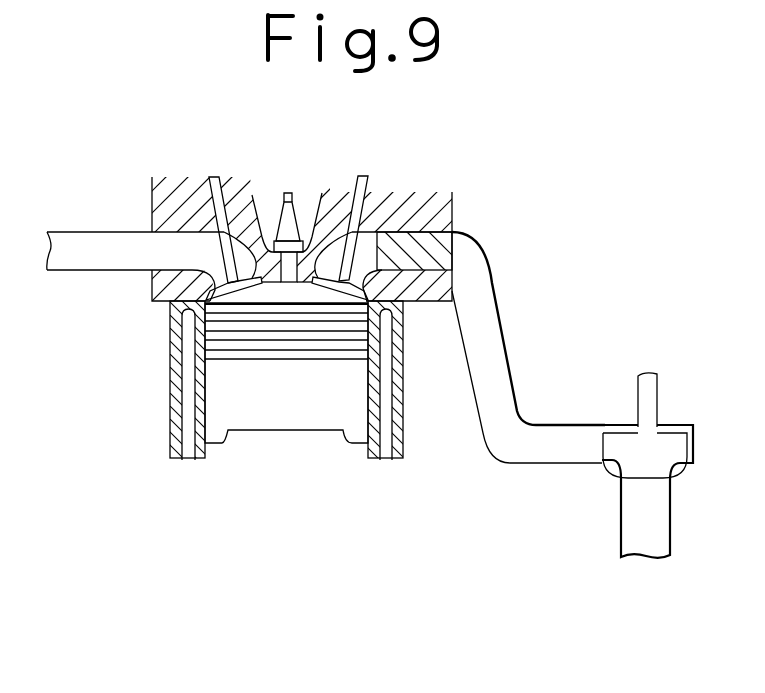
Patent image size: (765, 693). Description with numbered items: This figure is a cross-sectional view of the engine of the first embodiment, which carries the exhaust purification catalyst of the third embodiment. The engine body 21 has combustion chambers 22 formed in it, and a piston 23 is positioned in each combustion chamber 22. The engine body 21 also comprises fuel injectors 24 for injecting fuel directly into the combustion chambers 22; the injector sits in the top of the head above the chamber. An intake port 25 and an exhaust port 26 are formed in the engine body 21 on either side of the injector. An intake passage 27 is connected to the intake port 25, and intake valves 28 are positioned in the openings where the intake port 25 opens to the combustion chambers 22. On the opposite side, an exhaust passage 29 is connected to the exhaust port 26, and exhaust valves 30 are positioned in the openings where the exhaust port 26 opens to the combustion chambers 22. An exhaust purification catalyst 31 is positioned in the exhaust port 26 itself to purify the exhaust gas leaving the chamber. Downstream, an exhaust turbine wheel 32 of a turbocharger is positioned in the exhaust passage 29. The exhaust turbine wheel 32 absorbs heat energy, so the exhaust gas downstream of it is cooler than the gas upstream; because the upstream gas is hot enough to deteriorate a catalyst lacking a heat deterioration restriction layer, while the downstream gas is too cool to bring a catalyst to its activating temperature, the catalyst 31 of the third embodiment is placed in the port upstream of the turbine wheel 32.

The engine body 21 is at (413, 433).
The combustion chamber 22 is at (275, 294).
The piston 23 is at (322, 405).
The fuel injector 24 is at (283, 224).
The intake port 25 is at (168, 253).
The exhaust port 26 is at (363, 245).
The intake passage 27 is at (104, 272).
The intake valve 28 is at (211, 197).
The exhaust passage 29 is at (478, 318).
The exhaust valve 30 is at (353, 197).
The exhaust purification catalyst 31 is at (407, 230).
The exhaust turbine wheel 32 is at (620, 445).